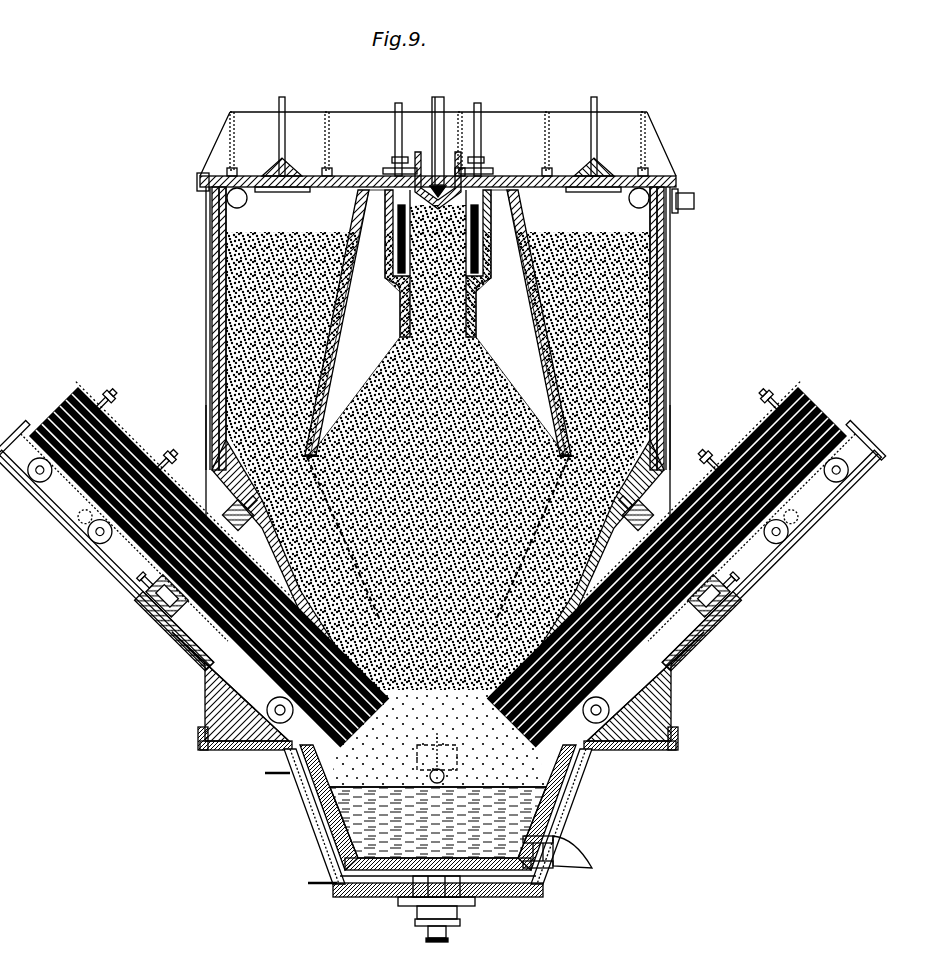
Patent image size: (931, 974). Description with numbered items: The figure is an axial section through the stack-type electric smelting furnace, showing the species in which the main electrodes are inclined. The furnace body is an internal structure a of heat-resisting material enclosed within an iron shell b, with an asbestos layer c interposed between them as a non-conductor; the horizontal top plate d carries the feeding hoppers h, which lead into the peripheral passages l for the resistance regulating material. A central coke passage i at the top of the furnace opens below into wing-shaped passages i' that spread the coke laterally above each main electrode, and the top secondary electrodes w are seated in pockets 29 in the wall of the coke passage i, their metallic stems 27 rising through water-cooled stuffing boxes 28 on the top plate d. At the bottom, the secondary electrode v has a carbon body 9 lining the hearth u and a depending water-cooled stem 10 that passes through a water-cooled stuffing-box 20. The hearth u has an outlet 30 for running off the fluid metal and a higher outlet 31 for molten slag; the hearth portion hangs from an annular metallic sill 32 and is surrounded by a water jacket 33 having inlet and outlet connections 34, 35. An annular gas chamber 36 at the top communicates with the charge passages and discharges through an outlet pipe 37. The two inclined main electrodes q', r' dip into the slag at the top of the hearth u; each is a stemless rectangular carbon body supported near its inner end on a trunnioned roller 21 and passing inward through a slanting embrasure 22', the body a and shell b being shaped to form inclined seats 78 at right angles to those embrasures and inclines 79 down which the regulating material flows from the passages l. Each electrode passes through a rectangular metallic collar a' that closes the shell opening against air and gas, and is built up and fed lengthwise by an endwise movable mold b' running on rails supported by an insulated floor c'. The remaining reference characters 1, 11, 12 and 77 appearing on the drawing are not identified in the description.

The furnace wall lining 1 is at (224, 305).
The carbon body 9 is at (355, 843).
The water-cooled metallic stem 10 is at (432, 933).
The inclined baffle partition 11 is at (360, 202).
The inclined frame brace 12 is at (218, 176).
The water-cooled stuffing-box 20 is at (413, 912).
The trunnioned horizontal roller 21 is at (260, 749).
The embrasure 22' is at (443, 686).
The metallic stem 27 is at (396, 128).
The water-cooled stuffing box 28 is at (392, 160).
The pocket 29 is at (397, 255).
The outlet 30 is at (573, 857).
The slag outlet 31 is at (437, 749).
The annular metallic sill 32 is at (205, 750).
The water jacket 33 is at (302, 808).
The inlet connection 34 is at (313, 888).
The outlet connection 35 is at (270, 778).
The annular gas chamber 36 is at (640, 222).
The outlet pipe 37 is at (694, 203).
The falling charge 77 is at (438, 730).
The inclined seat 78 is at (175, 632).
The incline 79 is at (228, 418).
The internal structure a is at (417, 328).
The metallic shell b is at (413, 328).
The non-conducting layer c is at (310, 283).
The top plate d is at (198, 182).
The feeding hopper h is at (437, 144).
The peripheral passage l is at (438, 205).
The central coke passage i is at (451, 257).
The wing-shaped passage i' is at (438, 323).
The top secondary electrode w is at (439, 263).
The hearth u is at (438, 822).
The bottom secondary electrode v is at (442, 862).
The inclined main electrode q' is at (208, 564).
The inclined main electrode r' is at (667, 564).
The endwise movable mold b' is at (438, 430).
The insulated floor c' is at (443, 546).
The electrode collar a' is at (433, 590).